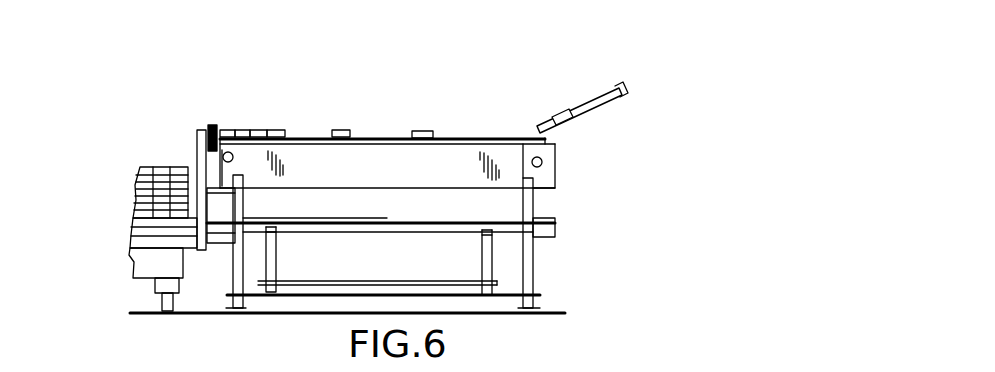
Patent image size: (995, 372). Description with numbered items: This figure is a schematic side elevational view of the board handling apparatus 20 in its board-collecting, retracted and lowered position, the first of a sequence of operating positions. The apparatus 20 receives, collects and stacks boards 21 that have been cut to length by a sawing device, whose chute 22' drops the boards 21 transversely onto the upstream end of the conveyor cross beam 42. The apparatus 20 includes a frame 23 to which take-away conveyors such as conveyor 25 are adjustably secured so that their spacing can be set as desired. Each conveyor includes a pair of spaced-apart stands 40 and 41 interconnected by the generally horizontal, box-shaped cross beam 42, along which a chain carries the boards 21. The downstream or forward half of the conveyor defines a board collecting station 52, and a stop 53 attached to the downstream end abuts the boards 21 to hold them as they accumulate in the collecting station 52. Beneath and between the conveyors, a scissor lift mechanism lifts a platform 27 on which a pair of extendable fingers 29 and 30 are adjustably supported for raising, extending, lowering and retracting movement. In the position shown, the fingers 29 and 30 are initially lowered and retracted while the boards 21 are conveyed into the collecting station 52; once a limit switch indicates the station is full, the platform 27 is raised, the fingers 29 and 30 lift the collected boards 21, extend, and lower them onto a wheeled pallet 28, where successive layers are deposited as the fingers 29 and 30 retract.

The board handling apparatus 20 is at (590, 66).
The boards 21 is at (258, 130).
The chute 22' is at (613, 111).
The frame 23 is at (492, 315).
The take-away conveyor 25 is at (558, 170).
The platform 27 is at (337, 283).
The wheeled pallet 28 is at (128, 257).
The finger 29 is at (333, 216).
The finger 30 is at (368, 138).
The stand 40 is at (229, 267).
The stand 41 is at (537, 265).
The cross beam 42 is at (457, 168).
The board collecting station 52 is at (243, 130).
The stop 53 is at (202, 128).